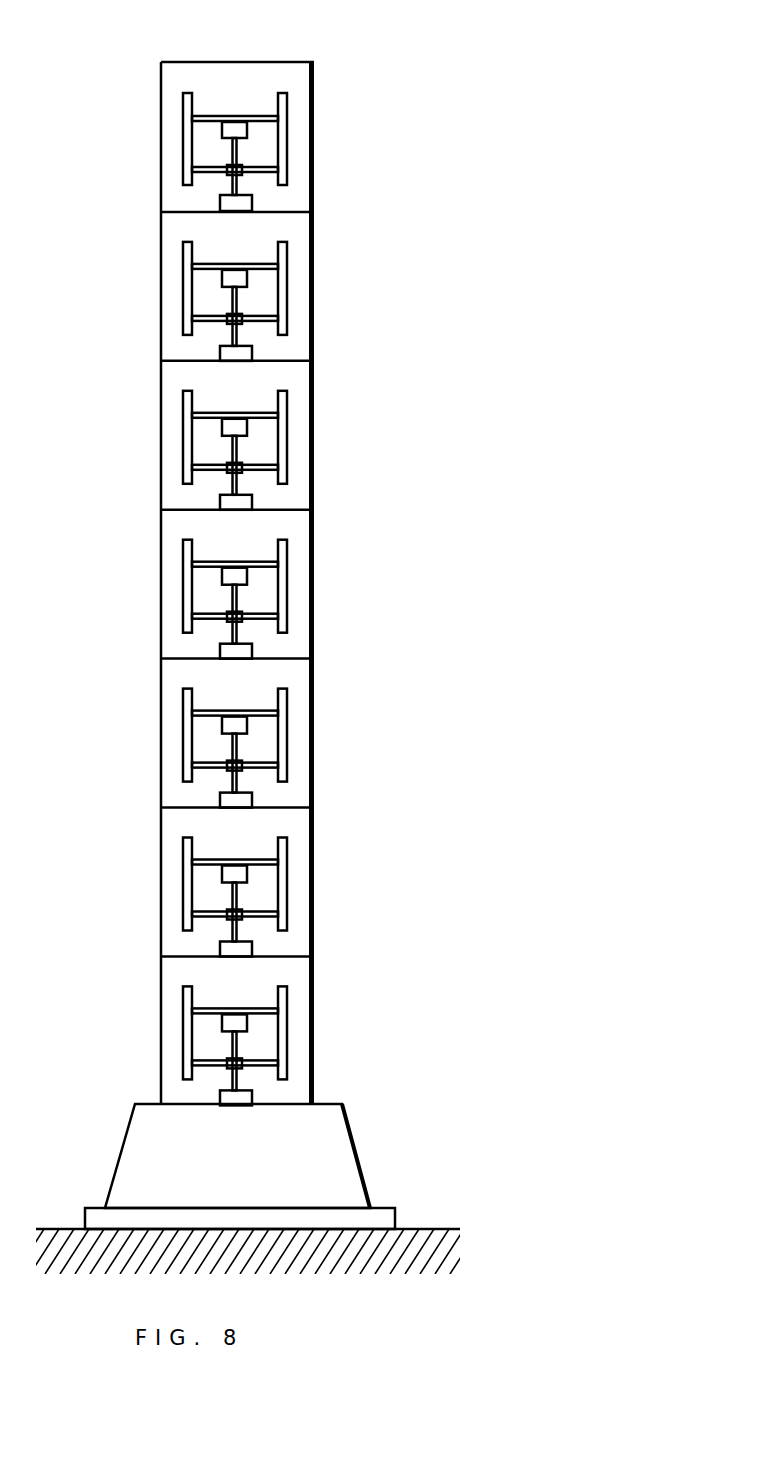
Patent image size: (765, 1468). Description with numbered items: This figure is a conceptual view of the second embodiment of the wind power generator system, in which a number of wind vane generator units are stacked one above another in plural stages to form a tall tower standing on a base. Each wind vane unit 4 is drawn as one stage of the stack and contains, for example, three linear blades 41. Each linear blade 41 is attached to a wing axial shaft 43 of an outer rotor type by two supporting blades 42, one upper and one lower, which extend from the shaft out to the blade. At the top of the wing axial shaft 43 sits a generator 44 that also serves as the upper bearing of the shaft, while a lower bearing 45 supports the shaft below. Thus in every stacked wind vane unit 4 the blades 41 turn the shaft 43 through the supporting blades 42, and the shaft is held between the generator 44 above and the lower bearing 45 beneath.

The wind vane unit 4 is at (314, 309).
The linear blade 41 is at (182, 118).
The supporting blade 42 is at (260, 116).
The wing axial shaft 43 is at (233, 157).
The generator 44 is at (226, 116).
The lower bearing 45 is at (226, 170).